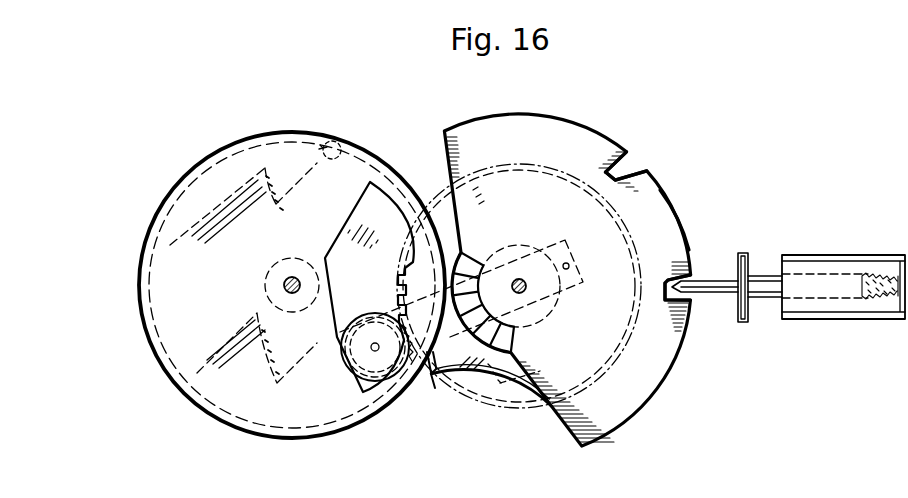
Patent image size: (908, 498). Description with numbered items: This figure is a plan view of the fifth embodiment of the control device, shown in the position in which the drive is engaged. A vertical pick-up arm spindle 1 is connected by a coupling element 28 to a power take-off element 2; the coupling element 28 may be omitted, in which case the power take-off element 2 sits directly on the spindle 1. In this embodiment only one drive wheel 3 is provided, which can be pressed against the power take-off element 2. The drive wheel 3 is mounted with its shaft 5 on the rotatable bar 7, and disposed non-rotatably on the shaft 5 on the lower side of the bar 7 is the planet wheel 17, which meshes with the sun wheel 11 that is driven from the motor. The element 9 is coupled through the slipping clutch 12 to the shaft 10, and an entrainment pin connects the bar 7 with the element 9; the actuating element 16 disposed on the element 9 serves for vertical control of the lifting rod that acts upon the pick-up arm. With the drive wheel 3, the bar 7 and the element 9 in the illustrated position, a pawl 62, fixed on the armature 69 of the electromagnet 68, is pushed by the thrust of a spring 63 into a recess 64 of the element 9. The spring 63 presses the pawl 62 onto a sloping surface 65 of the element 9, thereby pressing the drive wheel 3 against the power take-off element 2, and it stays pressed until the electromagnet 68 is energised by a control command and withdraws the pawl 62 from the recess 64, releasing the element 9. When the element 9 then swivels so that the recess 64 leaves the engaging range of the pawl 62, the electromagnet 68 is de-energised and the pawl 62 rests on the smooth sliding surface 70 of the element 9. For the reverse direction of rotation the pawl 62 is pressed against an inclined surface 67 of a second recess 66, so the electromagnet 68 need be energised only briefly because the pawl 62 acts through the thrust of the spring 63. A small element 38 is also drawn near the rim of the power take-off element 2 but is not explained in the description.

The pick-up arm spindle 1 is at (293, 276).
The power take-off element 2 is at (283, 133).
The drive wheel 3 is at (357, 314).
The shaft 5 is at (371, 349).
The rotatable bar 7 is at (448, 372).
The element 9 is at (555, 120).
The shaft 10 is at (524, 291).
The sun wheel 11 is at (487, 404).
The slipping clutch 12 is at (515, 247).
The actuating element 16 is at (514, 342).
The planet wheel 17 is at (350, 310).
The coupling element 28 is at (272, 272).
The stop pin 38 is at (348, 146).
The pawl 62 is at (713, 281).
The spring 63 is at (880, 304).
The recess 64 is at (668, 302).
The sloping surface 65 is at (668, 279).
The recess 66 is at (632, 163).
The inclined surface 67 is at (633, 182).
The electromagnet 68 is at (878, 263).
The armature 69 is at (769, 278).
The sliding surface 70 is at (679, 207).